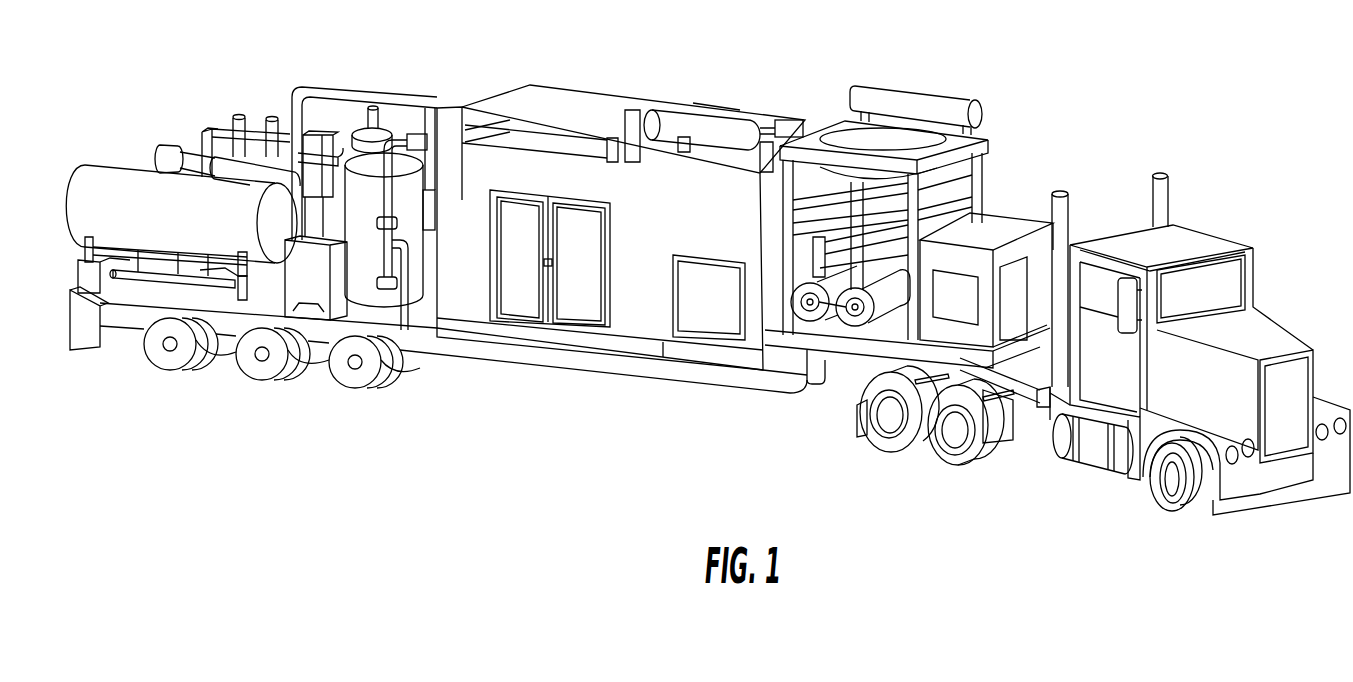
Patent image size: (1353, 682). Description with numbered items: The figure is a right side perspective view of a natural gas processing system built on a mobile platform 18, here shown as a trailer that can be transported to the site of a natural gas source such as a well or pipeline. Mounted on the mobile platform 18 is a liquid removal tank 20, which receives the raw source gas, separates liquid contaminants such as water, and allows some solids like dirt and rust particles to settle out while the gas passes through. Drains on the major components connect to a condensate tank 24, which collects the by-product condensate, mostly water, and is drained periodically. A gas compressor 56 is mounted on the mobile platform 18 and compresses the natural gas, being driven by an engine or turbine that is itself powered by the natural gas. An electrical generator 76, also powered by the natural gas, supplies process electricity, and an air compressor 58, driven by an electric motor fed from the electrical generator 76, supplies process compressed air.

The mobile platform 18 is at (463, 353).
The liquid removal tank 20 is at (363, 190).
The condensate tank 24 is at (158, 188).
The gas compressor 56 is at (642, 307).
The air compressor 58 is at (868, 305).
The electrical generator 76 is at (1015, 250).